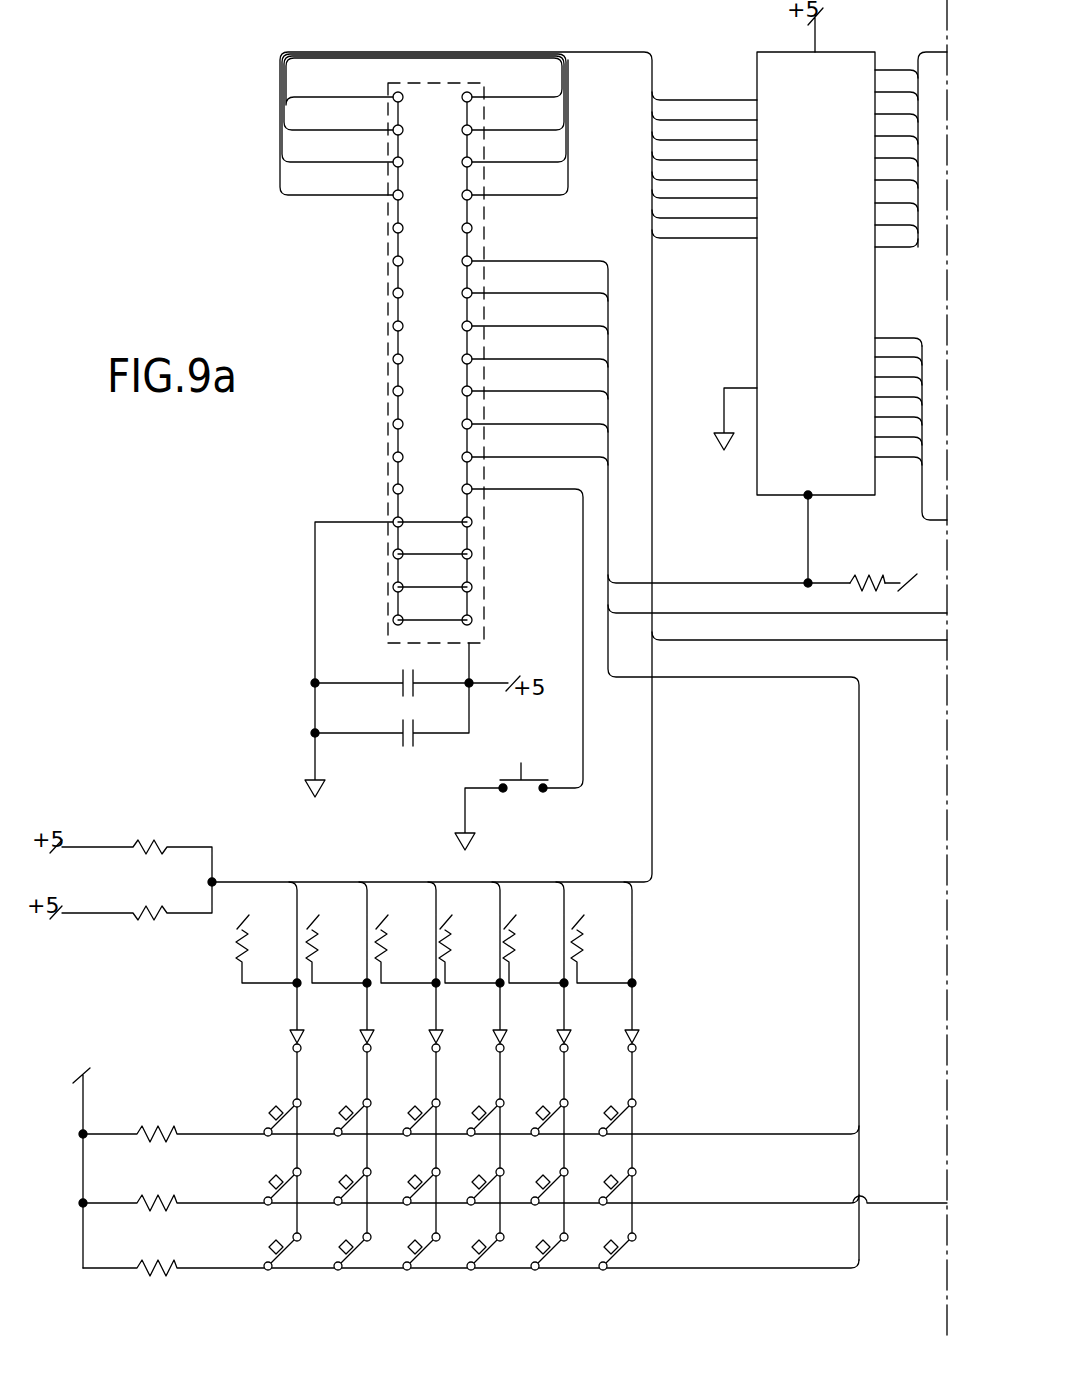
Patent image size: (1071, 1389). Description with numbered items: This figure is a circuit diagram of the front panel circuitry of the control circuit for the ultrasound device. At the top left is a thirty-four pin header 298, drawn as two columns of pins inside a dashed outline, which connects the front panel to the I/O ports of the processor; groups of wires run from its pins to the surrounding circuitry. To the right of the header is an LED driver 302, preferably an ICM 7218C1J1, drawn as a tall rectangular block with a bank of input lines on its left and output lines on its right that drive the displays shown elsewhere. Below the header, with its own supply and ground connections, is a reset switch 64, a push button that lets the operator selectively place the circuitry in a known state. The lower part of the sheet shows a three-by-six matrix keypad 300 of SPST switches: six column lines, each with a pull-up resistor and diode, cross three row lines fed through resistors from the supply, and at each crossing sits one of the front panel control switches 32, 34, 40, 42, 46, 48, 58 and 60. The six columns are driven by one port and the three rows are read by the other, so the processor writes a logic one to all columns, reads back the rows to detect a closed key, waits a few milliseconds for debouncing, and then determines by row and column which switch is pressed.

The 34 pin header 298 is at (388, 325).
The LED driver 302 is at (757, 58).
The matrix keypad 300 is at (676, 1095).
The reset switch 64 is at (527, 778).
The front panel control switch 34 is at (303, 1101).
The front panel control switch 46 is at (407, 1101).
The front panel control switch 48 is at (437, 1135).
The front panel control switch 42 is at (569, 1101).
The front panel control switch 32 is at (301, 1210).
The front panel control switch 40 is at (567, 1210).
The front panel control switch 60 is at (405, 1240).
The front panel control switch 58 is at (469, 1240).